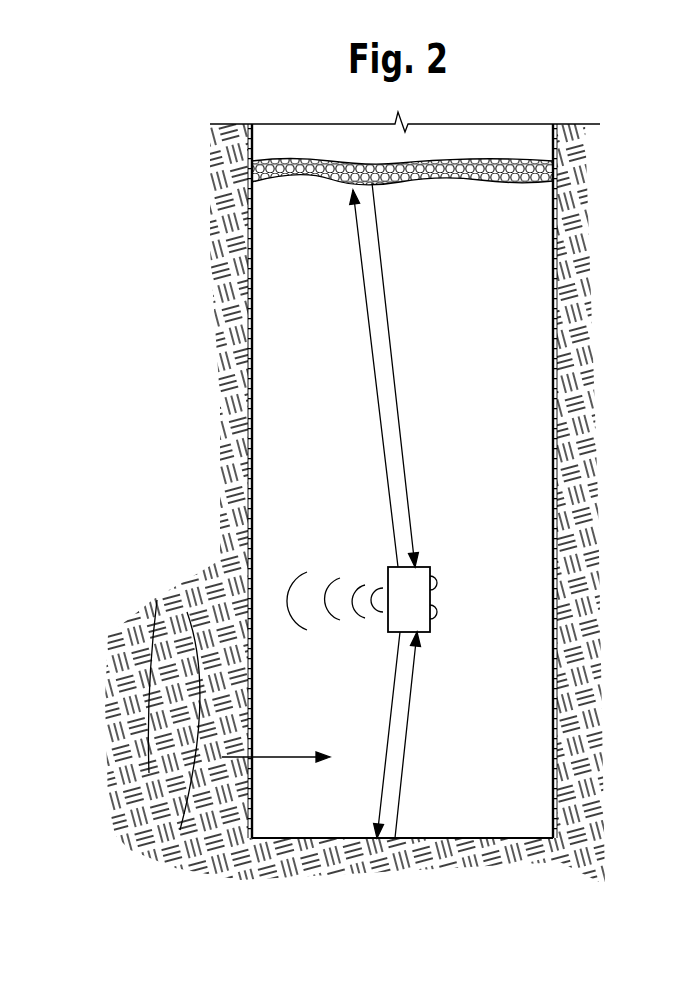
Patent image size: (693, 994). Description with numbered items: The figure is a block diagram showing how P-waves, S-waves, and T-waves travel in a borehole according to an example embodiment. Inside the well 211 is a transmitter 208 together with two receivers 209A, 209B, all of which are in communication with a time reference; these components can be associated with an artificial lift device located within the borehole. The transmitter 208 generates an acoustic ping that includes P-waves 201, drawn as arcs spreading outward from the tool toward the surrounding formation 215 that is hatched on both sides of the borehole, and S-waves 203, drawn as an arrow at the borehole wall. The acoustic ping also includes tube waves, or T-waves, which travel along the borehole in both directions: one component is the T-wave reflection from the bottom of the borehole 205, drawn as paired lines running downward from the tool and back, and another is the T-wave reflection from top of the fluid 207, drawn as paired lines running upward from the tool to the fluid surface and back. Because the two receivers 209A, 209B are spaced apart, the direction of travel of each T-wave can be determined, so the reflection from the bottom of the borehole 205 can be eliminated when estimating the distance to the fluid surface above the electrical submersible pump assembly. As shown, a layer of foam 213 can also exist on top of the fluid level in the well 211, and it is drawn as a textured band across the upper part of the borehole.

The P-waves 201 is at (285, 591).
The S-waves 203 is at (298, 758).
The T-wave reflection from the bottom of the borehole 205 is at (400, 795).
The T-wave reflection from top of the fluid 207 is at (366, 305).
The transmitter 208 is at (413, 580).
The first receiver 209A is at (438, 583).
The second receiver 209B is at (438, 612).
The well 211 is at (525, 165).
The layer of foam 213 is at (525, 163).
The formation 215 is at (553, 377).